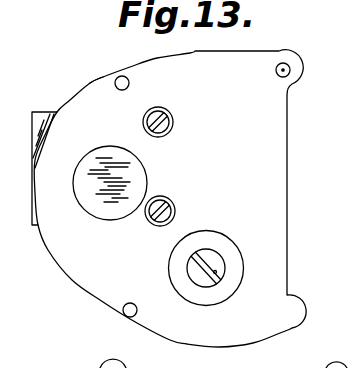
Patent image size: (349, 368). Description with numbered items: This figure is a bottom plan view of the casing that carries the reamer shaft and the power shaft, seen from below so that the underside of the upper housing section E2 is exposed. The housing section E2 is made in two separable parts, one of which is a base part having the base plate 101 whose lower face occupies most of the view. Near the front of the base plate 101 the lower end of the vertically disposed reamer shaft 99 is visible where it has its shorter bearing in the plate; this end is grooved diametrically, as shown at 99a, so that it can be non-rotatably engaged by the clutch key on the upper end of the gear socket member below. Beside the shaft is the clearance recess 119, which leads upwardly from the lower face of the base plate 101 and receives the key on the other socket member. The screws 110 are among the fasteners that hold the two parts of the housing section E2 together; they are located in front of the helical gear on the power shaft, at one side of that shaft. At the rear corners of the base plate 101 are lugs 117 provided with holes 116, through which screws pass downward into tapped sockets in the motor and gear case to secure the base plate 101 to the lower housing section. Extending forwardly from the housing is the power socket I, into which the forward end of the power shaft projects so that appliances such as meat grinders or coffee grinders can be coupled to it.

The base plate 101 is at (259, 133).
The holes 116 is at (288, 63).
The lugs 117 is at (298, 65).
The power socket I is at (45, 111).
The upper housing section E2 is at (103, 77).
The screws 110 is at (170, 114).
The clearance recess 119 is at (104, 145).
The reamer shaft 99 is at (211, 257).
The diametrical groove 99a is at (217, 272).